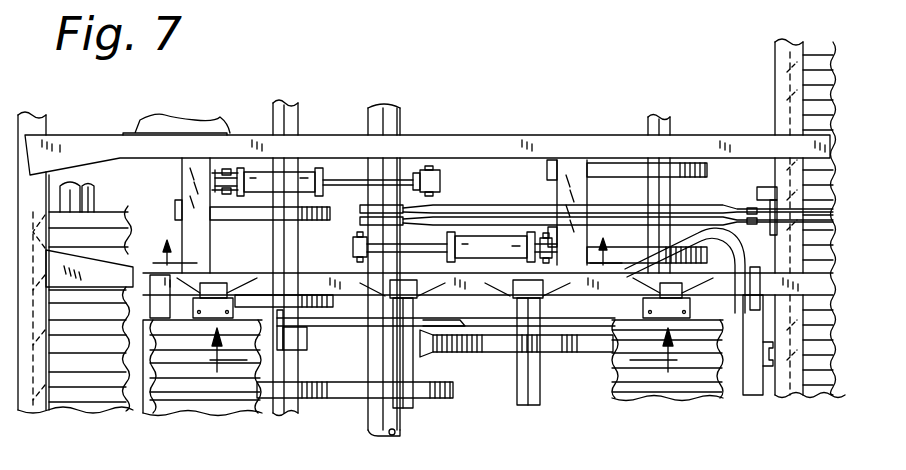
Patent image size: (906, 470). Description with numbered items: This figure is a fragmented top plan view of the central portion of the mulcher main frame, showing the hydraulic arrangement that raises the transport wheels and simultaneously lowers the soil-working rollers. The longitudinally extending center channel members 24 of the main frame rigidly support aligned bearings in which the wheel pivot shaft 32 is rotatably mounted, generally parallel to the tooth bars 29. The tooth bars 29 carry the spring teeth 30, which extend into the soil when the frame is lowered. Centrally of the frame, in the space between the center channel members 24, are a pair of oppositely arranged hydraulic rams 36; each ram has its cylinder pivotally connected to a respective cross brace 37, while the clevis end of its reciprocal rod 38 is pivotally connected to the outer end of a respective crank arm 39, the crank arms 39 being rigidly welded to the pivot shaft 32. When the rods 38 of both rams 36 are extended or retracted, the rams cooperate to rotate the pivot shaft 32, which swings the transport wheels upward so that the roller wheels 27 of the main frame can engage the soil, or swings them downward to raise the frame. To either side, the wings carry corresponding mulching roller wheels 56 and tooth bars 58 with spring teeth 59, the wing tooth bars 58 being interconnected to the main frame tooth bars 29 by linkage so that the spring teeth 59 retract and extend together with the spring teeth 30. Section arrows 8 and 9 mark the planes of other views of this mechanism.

The section line 8- 8 is at (384, 249).
The section line 9- 9 is at (442, 350).
The center channel member 24 is at (499, 134).
The roller wheel 27 is at (150, 190).
The tooth bar 29 is at (296, 111).
The spring teeth 30 is at (268, 220).
The wheel pivot shaft 32 is at (395, 105).
The hydraulic ram 36 is at (386, 215).
The cross brace 37 is at (212, 232).
The reciprocal rod 38 is at (337, 170).
The crank arm 39 is at (450, 180).
The mulching roller wheel 56 is at (222, 413).
The tooth bar 58 is at (390, 352).
The spring teeth 59 is at (433, 398).